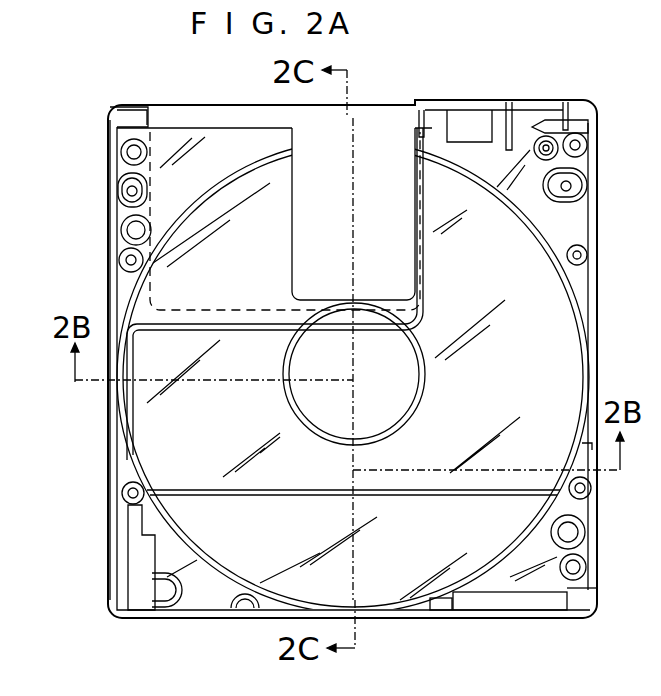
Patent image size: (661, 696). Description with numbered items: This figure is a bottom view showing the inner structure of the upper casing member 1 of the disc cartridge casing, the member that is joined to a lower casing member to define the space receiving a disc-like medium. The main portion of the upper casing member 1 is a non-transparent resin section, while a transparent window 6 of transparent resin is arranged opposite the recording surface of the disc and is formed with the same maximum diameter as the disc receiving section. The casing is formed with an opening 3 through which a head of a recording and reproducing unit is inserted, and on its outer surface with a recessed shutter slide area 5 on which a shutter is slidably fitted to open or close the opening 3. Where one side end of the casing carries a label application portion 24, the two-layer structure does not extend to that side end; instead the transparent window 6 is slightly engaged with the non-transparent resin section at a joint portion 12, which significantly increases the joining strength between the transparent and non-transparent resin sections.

The upper casing member 1 is at (480, 100).
The opening 3 is at (372, 148).
The shutter slide area 5 is at (118, 290).
The transparent window 6 is at (565, 375).
The joint portion 12 is at (224, 324).
The label application portion 24 is at (108, 168).